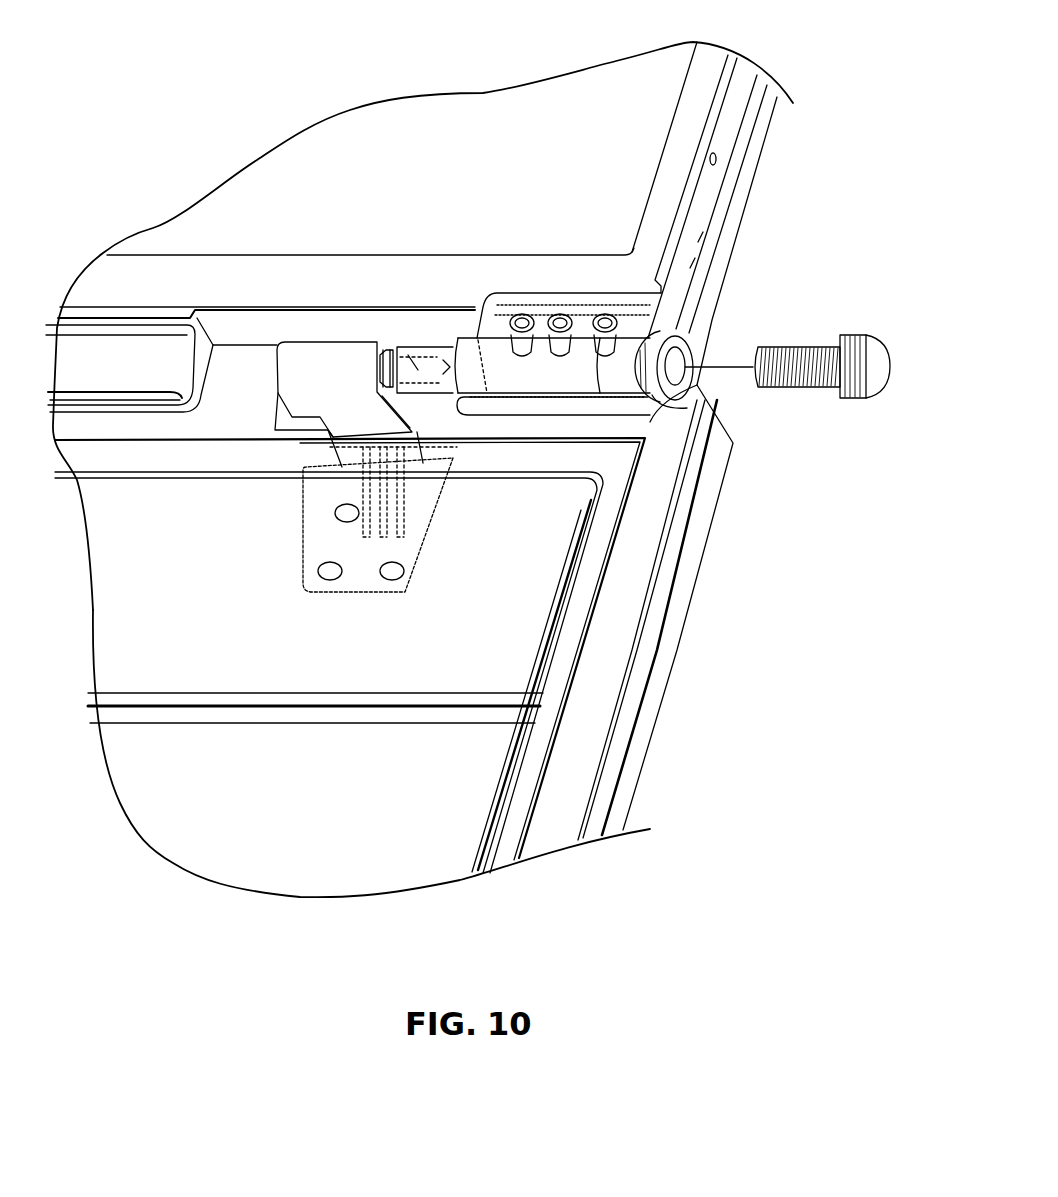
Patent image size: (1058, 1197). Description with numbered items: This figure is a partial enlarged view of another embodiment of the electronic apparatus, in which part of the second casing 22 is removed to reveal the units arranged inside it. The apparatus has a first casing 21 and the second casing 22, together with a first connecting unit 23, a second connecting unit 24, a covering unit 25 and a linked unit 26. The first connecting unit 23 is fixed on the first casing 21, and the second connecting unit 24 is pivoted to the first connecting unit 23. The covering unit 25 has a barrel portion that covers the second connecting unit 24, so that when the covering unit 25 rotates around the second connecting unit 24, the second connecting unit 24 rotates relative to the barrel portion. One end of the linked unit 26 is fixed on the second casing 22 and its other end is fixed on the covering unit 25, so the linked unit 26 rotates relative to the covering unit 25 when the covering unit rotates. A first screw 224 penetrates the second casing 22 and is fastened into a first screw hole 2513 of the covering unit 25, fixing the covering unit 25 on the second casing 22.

The first casing 21 is at (727, 687).
The second casing 22 is at (763, 197).
The first screw 224 is at (882, 358).
The first connecting unit 23 is at (333, 360).
The second connecting unit 24 is at (395, 330).
The covering unit 25 is at (433, 347).
The linked unit 26 is at (617, 299).
The first screw hole 2513 is at (633, 360).